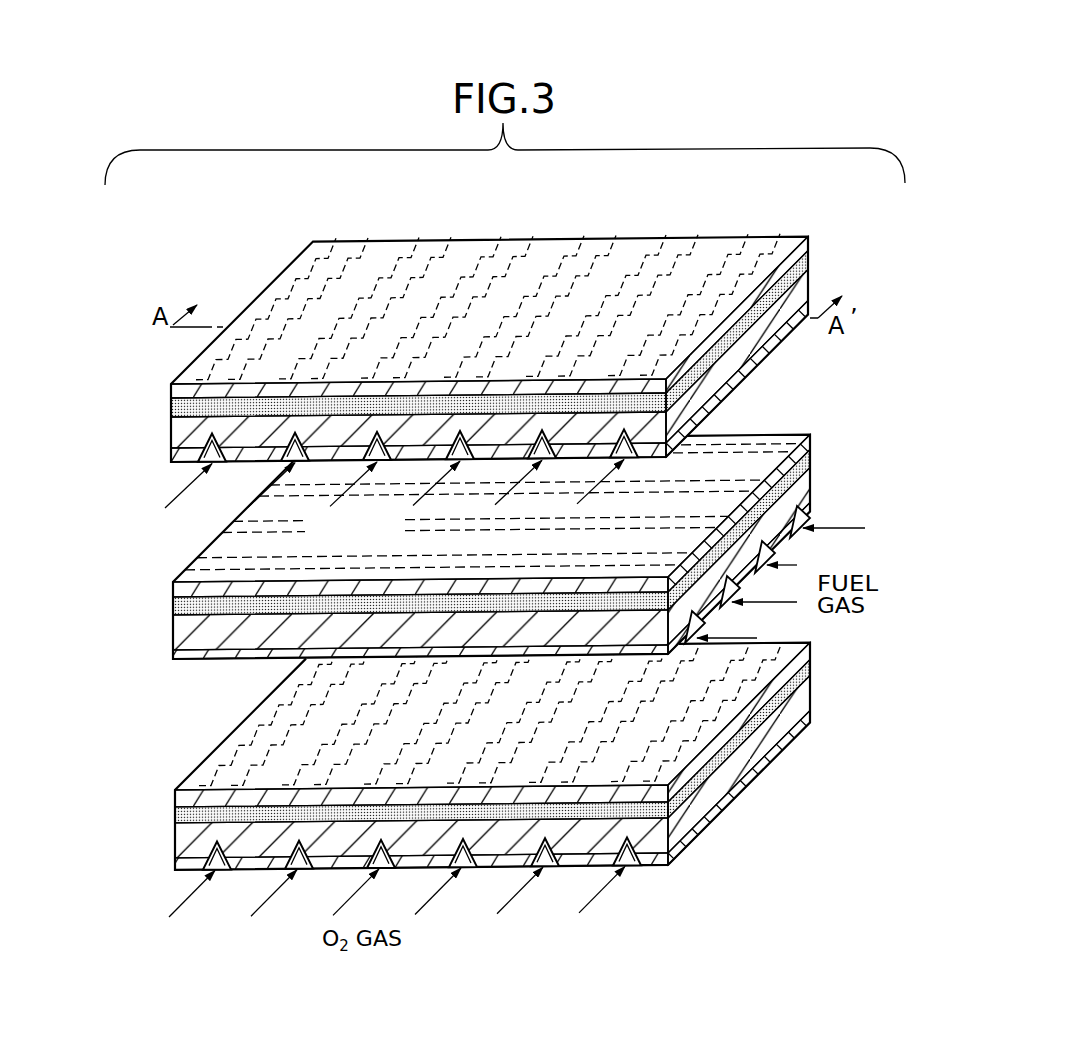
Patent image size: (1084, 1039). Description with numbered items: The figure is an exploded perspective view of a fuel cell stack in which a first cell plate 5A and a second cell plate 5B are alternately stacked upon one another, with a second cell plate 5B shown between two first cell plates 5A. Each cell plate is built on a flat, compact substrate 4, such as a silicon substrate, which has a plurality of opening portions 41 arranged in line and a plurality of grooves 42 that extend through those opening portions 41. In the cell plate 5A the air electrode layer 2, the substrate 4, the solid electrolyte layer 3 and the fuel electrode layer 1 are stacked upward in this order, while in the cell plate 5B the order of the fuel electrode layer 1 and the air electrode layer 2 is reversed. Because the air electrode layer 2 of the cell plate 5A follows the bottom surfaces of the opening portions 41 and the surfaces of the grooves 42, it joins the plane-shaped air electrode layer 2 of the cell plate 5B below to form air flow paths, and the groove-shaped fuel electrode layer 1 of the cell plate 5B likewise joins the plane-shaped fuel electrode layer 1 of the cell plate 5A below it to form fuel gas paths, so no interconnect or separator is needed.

The fuel electrode layer 1 is at (790, 247).
The air electrode layer 2 is at (792, 333).
The solid electrolyte layer 3 is at (806, 262).
The substrate 4 is at (809, 296).
The opening portions 41 is at (678, 310).
The grooves 42 is at (702, 290).
The first cell plate 5A is at (162, 385).
The second cell plate 5B is at (162, 583).